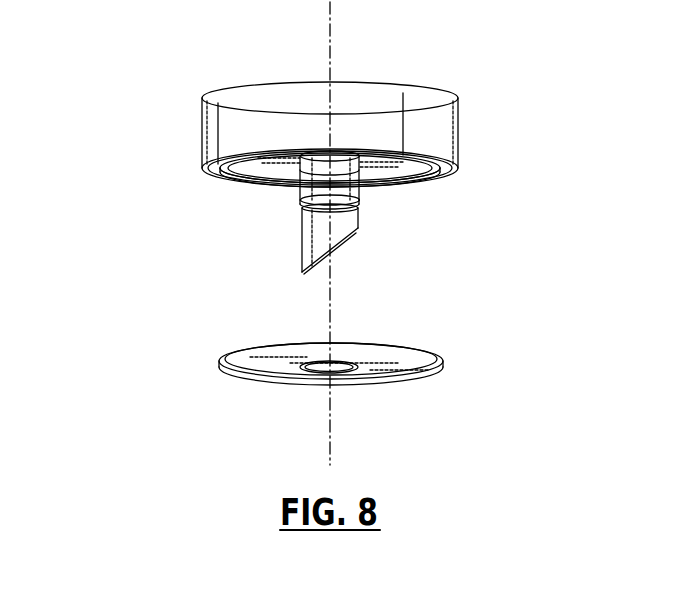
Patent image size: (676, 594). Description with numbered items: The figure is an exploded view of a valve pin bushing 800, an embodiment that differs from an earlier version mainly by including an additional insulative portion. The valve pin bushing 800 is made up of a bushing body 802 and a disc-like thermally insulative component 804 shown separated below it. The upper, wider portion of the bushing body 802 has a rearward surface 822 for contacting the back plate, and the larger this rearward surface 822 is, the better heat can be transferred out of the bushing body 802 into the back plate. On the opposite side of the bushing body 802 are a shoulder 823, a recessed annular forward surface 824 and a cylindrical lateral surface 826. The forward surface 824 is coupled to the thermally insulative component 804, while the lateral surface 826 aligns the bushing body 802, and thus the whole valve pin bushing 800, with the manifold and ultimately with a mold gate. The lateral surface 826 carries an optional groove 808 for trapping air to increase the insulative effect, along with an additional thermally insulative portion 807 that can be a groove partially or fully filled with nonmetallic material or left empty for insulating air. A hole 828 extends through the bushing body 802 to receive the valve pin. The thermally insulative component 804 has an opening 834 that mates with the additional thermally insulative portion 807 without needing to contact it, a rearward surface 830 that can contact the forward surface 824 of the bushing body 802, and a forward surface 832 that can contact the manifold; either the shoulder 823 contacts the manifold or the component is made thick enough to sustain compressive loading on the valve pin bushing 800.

The valve pin bushing 800 is at (98, 70).
The bushing body 802 is at (472, 140).
The thermally insulative component 804 is at (450, 362).
The additional thermally insulative portion 807 is at (296, 160).
The groove 808 is at (360, 199).
The rearward surface 822 is at (238, 88).
The shoulder 823 is at (213, 172).
The recessed annular forward surface 824 is at (262, 170).
The cylindrical lateral surface 826 is at (360, 218).
The hole 828 is at (338, 262).
The rearward surface 830 is at (255, 347).
The forward surface 832 is at (245, 370).
The opening 834 is at (345, 386).